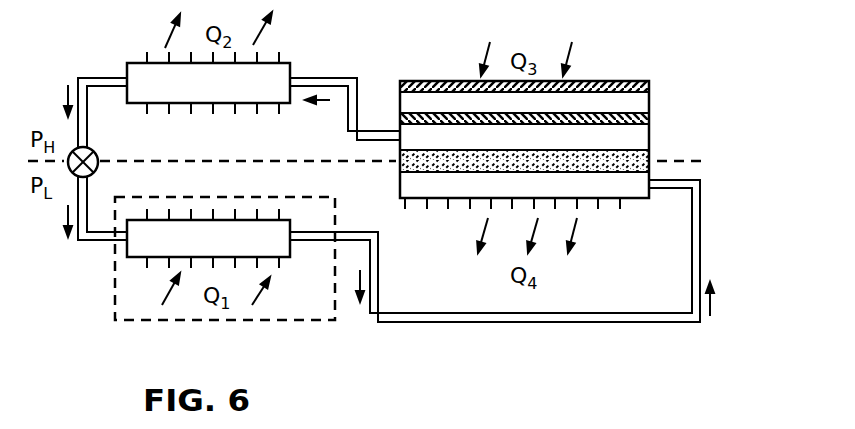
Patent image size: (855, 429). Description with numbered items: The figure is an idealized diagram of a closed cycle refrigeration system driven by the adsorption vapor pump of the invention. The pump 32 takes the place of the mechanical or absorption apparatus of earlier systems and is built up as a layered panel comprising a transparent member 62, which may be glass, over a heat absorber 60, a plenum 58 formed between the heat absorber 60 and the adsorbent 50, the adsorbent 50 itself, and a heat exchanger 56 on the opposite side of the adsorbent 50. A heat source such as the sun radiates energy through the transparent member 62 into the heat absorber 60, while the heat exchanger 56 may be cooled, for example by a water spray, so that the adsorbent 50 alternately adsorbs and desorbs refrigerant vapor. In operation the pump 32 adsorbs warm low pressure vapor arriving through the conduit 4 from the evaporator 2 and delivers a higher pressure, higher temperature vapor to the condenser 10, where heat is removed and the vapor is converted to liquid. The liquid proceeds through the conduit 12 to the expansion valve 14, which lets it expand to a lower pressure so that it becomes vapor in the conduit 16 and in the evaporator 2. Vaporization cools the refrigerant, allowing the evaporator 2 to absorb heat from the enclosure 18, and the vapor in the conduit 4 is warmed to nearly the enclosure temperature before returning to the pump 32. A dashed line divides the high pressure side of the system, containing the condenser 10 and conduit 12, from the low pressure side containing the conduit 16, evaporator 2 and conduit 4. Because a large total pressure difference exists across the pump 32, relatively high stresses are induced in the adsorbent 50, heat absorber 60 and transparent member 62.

The evaporator 2 is at (291, 251).
The conduit 4 is at (380, 258).
The condenser 10 is at (291, 63).
The conduit 12 is at (88, 78).
The expansion valve 14 is at (96, 156).
The conduit 16 is at (95, 242).
The enclosure 18 is at (296, 197).
The pump 32 is at (599, 148).
The adsorbent 50 is at (642, 161).
The heat exchanger 56 is at (545, 214).
The plenum 58 is at (637, 134).
The heat absorber 60 is at (650, 112).
The transparent member 62 is at (650, 84).